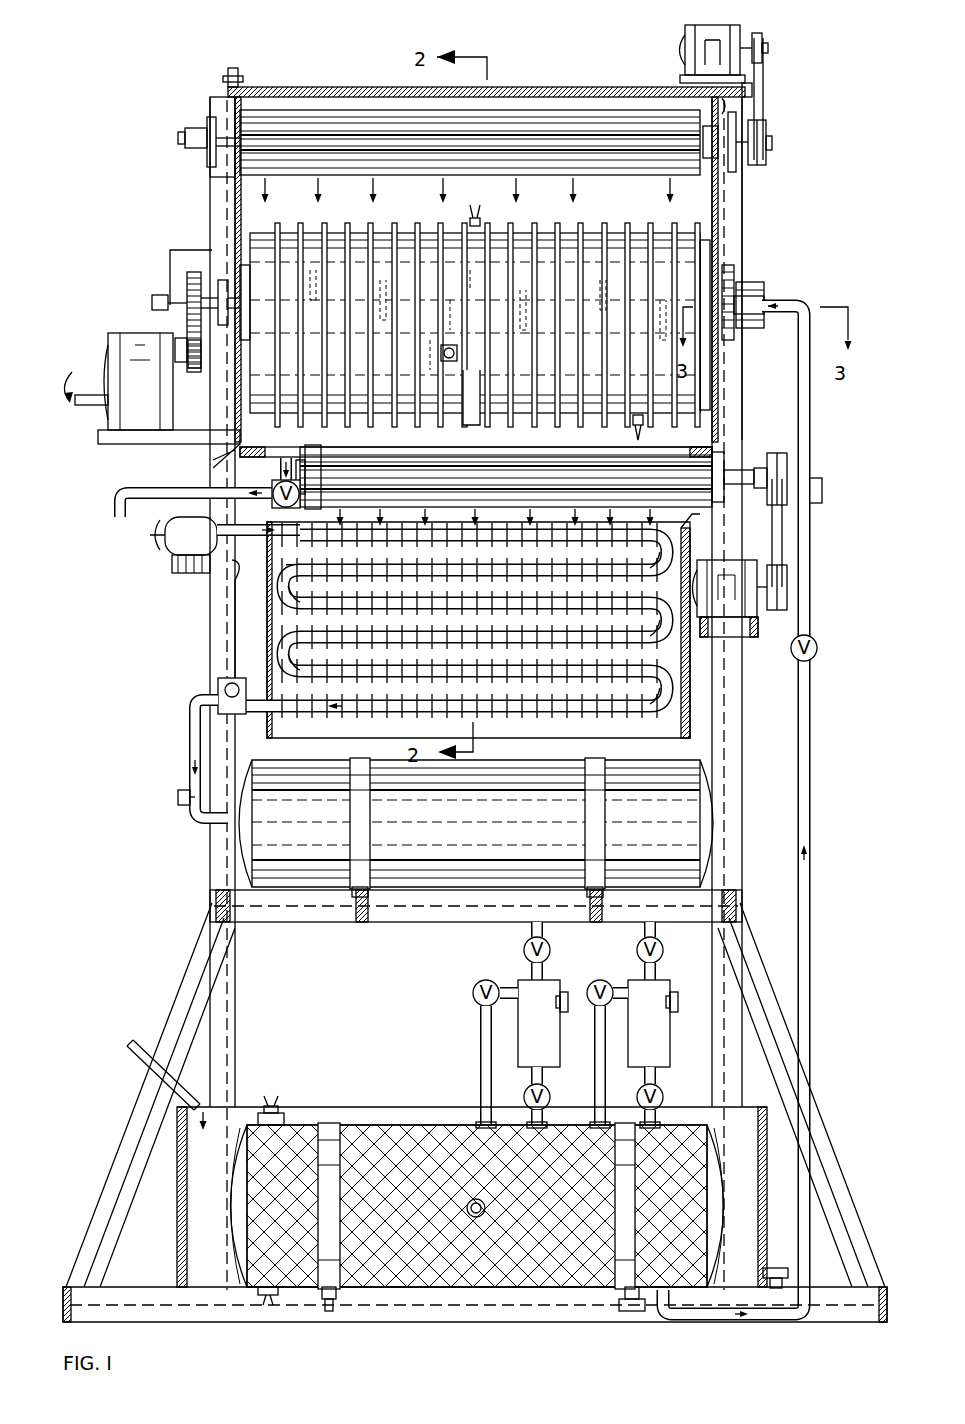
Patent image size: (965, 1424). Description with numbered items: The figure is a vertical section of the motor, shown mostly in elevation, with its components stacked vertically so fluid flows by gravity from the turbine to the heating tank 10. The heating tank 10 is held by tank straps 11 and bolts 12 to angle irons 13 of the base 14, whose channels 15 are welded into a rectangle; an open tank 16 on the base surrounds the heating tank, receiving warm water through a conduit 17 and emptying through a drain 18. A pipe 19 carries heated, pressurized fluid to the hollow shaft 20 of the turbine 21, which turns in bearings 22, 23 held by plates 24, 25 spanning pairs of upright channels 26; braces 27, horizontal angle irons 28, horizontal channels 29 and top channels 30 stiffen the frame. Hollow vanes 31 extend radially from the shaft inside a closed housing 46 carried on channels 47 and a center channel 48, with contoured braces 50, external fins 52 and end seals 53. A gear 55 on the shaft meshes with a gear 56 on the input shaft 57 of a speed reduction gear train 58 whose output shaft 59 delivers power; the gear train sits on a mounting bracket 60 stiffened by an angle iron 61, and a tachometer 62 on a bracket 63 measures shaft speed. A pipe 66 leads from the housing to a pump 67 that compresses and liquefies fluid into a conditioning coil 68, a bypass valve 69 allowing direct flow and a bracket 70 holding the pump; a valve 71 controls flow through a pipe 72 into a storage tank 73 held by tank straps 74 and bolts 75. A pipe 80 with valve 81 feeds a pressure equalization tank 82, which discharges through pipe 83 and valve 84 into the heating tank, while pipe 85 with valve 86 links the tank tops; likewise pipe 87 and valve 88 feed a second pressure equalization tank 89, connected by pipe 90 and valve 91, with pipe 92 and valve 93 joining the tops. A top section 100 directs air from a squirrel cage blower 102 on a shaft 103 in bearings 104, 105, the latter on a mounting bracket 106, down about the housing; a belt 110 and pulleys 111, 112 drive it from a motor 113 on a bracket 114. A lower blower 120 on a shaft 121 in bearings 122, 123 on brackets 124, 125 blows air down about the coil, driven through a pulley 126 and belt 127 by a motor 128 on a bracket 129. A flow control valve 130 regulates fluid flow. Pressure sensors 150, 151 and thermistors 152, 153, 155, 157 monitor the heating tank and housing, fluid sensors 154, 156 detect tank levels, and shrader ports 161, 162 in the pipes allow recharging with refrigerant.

The heating tank 10 is at (405, 1280).
The tank straps 11 is at (332, 1123).
The bolts 12 is at (328, 1300).
The angle irons 13 is at (335, 1312).
The base 14 is at (96, 1178).
The channels 15 is at (63, 1310).
The open tank 16 is at (177, 1232).
The conduit 17 is at (125, 1052).
The drain 18 is at (778, 1290).
The pipe 19 is at (812, 702).
The hollow shaft 20 is at (312, 245).
The turbine 21 is at (790, 280).
The bearing 22 is at (762, 300).
The bearing 23 is at (220, 295).
The plate 24 is at (742, 233).
The plate 25 is at (212, 170).
The upright channels 26 is at (210, 660).
The braces 27 is at (128, 1107).
The horizontal angle irons 28 is at (362, 922).
The horizontal channels 29 is at (425, 922).
The top channels 30 is at (728, 104).
The hollow vanes 31 is at (300, 245).
The closed housing 46 is at (697, 240).
The channels 47 is at (232, 454).
The center channel 48 is at (478, 425).
The contoured braces 50 is at (250, 402).
The fins 52 is at (582, 245).
The seals 53 is at (240, 280).
The gear 55 is at (187, 283).
The gear 56 is at (178, 345).
The input shaft 57 is at (193, 370).
The speed reduction gear train 58 is at (118, 360).
The output shaft 59 is at (82, 410).
The mounting bracket 60 is at (128, 446).
The angle iron 61 is at (212, 464).
The tachometer 62 is at (152, 302).
The bracket 63 is at (178, 250).
The pipe 66 is at (282, 466).
The pump 67 is at (165, 536).
The conditioning coil 68 is at (267, 610).
The bypass valve 69 is at (275, 482).
The bracket 70 is at (232, 575).
The valve 71 is at (218, 694).
The pipe 72 is at (189, 742).
The fluid storage tank 73 is at (710, 768).
The tank straps 74 is at (350, 820).
The bolts 75 is at (366, 887).
The pipe 80 is at (656, 930).
The valve 81 is at (663, 958).
The pressure equalization tank 82 is at (649, 1015).
The pipe 83 is at (646, 1078).
The valve 84 is at (664, 1094).
The pipe 85 is at (595, 1058).
The valve 86 is at (604, 980).
The pipe 87 is at (530, 930).
The valve 88 is at (524, 958).
The second pressure equalization tank 89 is at (539, 1015).
The pipe 90 is at (530, 1075).
The valve 91 is at (522, 1098).
The pipe 92 is at (480, 1036).
The valve 93 is at (472, 996).
The top section 100 is at (496, 87).
The blower 102 is at (560, 110).
The shaft 103 is at (178, 138).
The bearing 104 is at (736, 150).
The bearing 105 is at (207, 122).
The mounting bracket 106 is at (222, 100).
The belt 110 is at (766, 72).
The pulley 111 is at (764, 36).
The pulley 112 is at (768, 148).
The motor 113 is at (683, 30).
The bracket 114 is at (752, 90).
The blower 120 is at (730, 440).
The shaft 121 is at (757, 570).
The bearing 122 is at (300, 455).
The bearing 123 is at (754, 475).
The bracket 124 is at (286, 572).
The bracket 125 is at (724, 470).
The pulley 126 is at (790, 478).
The belt 127 is at (784, 530).
The motor 128 is at (790, 585).
The bracket 129 is at (758, 628).
The flow control valve 130 is at (820, 645).
The pressure sensor 150 is at (280, 1108).
The pressure sensor 151 is at (482, 220).
The thermistor 152 is at (268, 1308).
The thermistor 153 is at (632, 428).
The fluid sensor 154 is at (680, 1012).
The second thermistor 155 is at (473, 1218).
The fluid sensor 156 is at (566, 992).
The second thermistor 157 is at (440, 358).
The shrader port 161 is at (822, 490).
The shrader port 162 is at (178, 798).